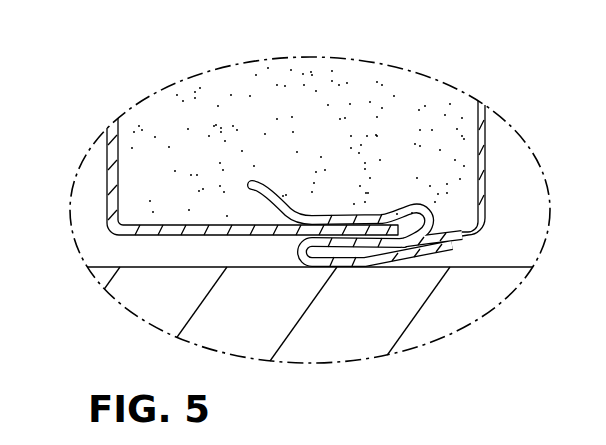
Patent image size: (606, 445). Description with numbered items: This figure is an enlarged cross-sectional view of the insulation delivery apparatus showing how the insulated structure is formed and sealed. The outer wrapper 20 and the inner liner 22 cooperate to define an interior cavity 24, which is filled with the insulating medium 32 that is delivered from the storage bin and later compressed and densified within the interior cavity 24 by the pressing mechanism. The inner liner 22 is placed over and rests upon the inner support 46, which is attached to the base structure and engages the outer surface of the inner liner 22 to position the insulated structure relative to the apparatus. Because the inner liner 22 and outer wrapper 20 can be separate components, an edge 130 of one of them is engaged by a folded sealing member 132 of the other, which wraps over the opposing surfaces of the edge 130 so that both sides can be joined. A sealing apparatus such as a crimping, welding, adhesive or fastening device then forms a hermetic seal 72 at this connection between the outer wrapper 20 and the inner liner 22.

The outer wrapper 20 is at (293, 149).
The inner liner 22 is at (103, 178).
The interior cavity 24 is at (222, 110).
The insulating medium 32 is at (427, 123).
The inner support 46 is at (385, 325).
The seal 72 is at (293, 261).
The edge 130 is at (303, 185).
The folded sealing member 132 is at (350, 213).